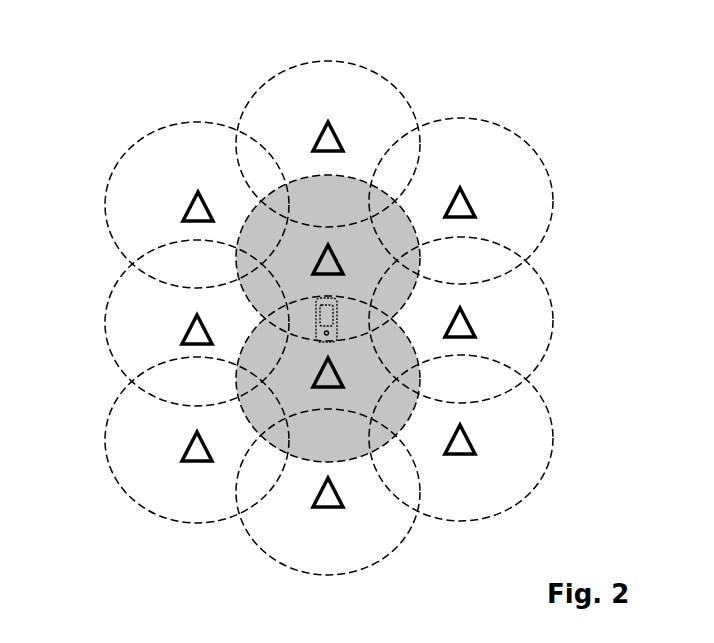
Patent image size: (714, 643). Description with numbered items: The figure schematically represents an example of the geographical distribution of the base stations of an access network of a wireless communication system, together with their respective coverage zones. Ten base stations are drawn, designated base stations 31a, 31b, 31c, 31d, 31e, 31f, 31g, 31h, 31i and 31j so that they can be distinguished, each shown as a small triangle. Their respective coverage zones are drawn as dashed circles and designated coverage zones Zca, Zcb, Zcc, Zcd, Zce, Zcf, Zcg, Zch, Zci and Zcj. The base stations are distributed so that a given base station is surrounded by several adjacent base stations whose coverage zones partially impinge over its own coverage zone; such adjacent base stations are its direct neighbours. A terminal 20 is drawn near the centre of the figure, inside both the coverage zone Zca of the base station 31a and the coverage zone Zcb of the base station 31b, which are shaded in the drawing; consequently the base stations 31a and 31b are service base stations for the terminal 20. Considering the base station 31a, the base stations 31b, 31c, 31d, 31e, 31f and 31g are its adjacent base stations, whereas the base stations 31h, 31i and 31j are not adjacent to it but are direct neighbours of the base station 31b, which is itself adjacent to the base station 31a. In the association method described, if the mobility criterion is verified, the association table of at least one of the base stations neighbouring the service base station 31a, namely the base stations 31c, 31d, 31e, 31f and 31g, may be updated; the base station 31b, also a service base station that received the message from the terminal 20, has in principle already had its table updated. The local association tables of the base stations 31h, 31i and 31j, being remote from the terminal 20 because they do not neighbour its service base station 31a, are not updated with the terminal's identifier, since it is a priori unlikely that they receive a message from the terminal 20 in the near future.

The terminal 20 is at (337, 318).
The base station 31a is at (339, 367).
The base station 31b is at (340, 260).
The base station 31c is at (469, 318).
The base station 31d is at (469, 437).
The base station 31e is at (330, 508).
The base station 31f is at (188, 440).
The base station 31g is at (189, 324).
The base station 31h is at (191, 200).
The base station 31i is at (341, 134).
The base station 31j is at (468, 198).
The coverage zone Zca is at (397, 423).
The coverage zone Zcb is at (303, 175).
The coverage zone Zcc is at (553, 320).
The coverage zone Zcd is at (553, 438).
The coverage zone Zce is at (410, 517).
The coverage zone Zcf is at (105, 441).
The coverage zone Zcg is at (105, 324).
The coverage zone Zch is at (105, 206).
The coverage zone Zci is at (393, 78).
The coverage zone Zcj is at (553, 204).